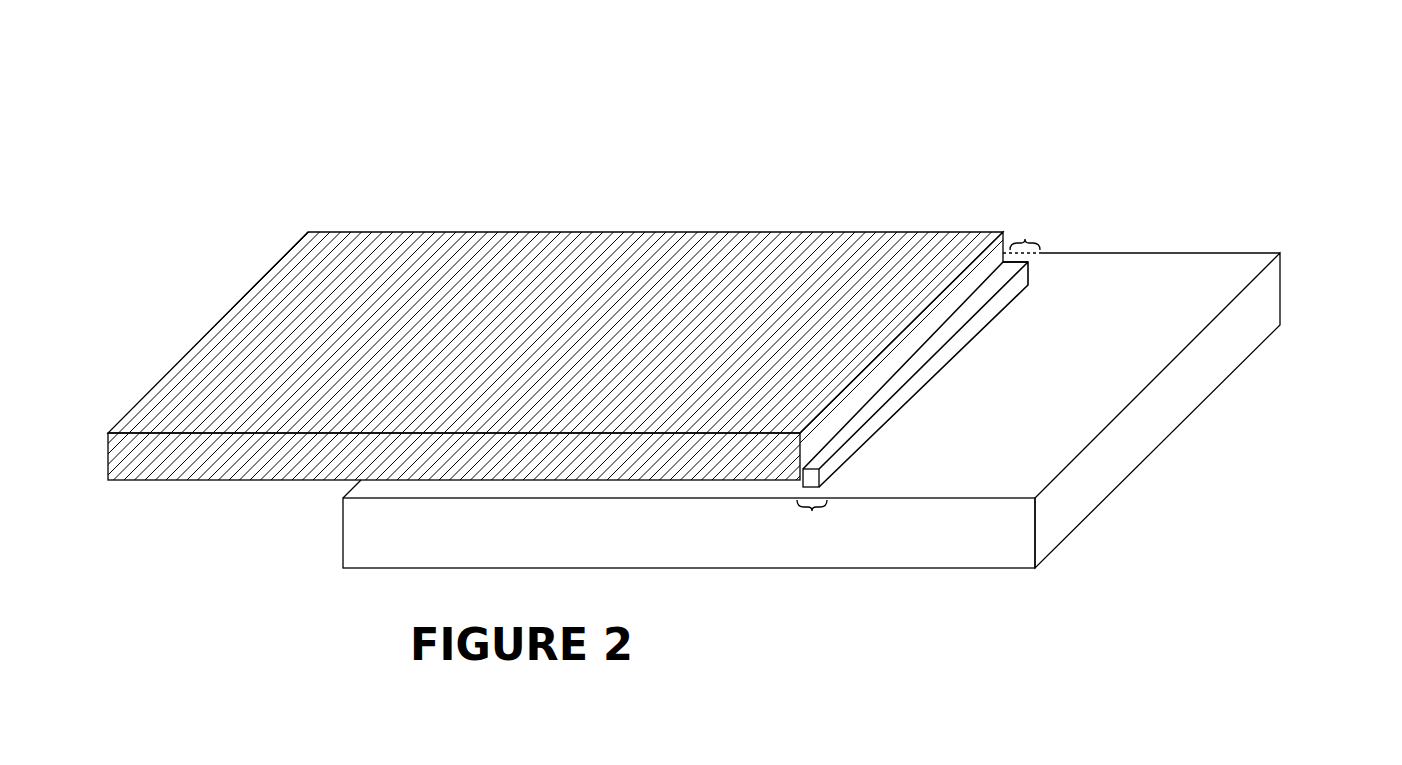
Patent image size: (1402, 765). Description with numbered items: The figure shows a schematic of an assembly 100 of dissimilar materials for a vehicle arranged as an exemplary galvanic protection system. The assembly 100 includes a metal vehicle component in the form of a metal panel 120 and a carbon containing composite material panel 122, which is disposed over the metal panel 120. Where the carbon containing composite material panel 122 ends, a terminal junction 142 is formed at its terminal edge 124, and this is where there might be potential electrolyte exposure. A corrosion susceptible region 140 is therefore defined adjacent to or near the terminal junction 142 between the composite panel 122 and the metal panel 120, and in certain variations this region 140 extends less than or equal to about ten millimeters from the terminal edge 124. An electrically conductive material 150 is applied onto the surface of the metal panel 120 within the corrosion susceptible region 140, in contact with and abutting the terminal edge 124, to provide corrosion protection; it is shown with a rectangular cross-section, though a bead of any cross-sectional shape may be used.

The assembly 100 is at (250, 98).
The metal panel 120 is at (1283, 295).
The carbon containing composite material panel 122 is at (278, 262).
The terminal edge 124 is at (917, 340).
The corrosion susceptible region 140 is at (919, 372).
The terminal junction 142 is at (794, 486).
The electrically conductive material 150 is at (1030, 270).